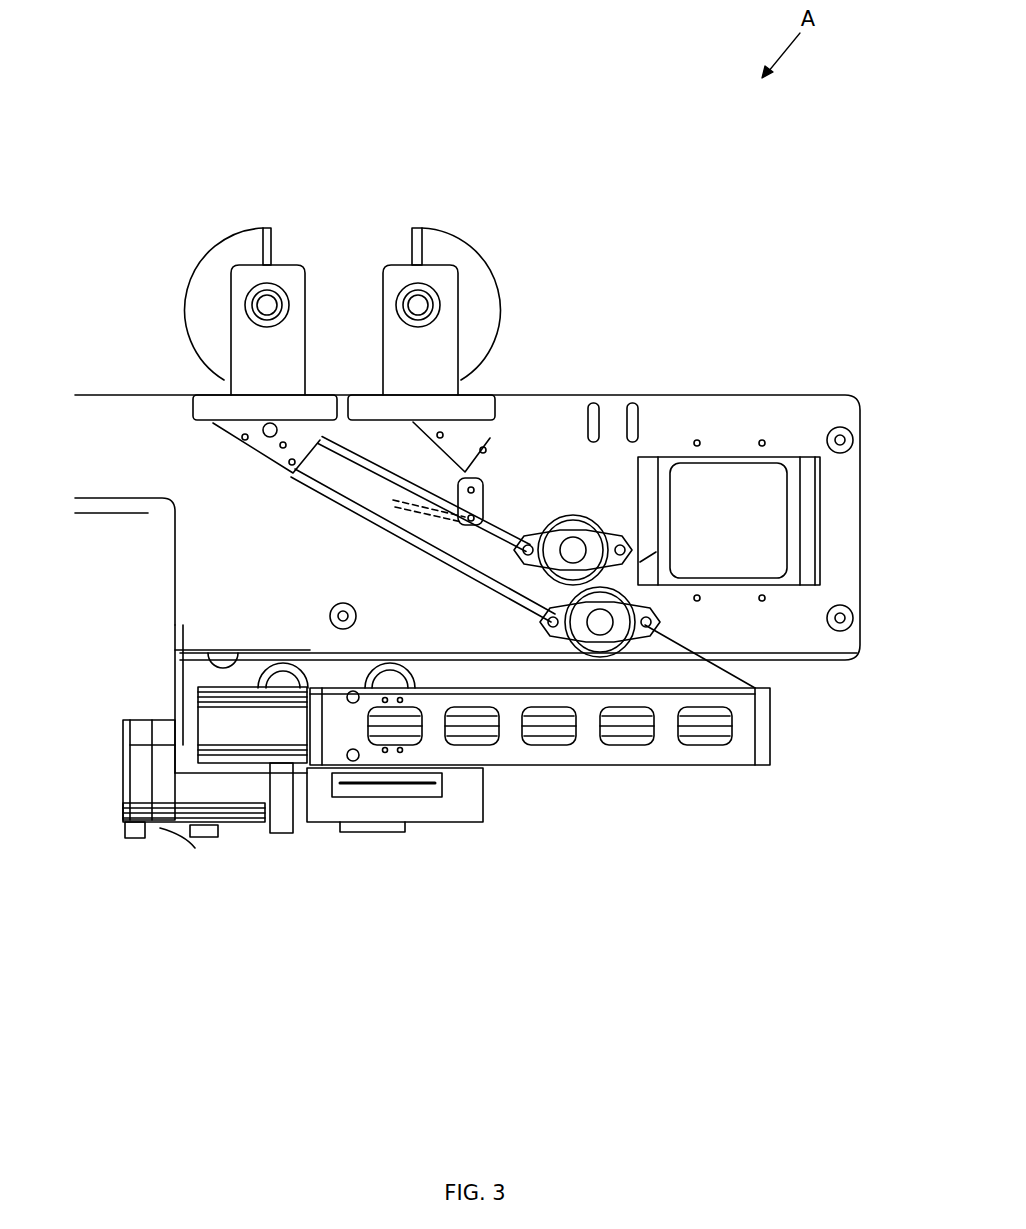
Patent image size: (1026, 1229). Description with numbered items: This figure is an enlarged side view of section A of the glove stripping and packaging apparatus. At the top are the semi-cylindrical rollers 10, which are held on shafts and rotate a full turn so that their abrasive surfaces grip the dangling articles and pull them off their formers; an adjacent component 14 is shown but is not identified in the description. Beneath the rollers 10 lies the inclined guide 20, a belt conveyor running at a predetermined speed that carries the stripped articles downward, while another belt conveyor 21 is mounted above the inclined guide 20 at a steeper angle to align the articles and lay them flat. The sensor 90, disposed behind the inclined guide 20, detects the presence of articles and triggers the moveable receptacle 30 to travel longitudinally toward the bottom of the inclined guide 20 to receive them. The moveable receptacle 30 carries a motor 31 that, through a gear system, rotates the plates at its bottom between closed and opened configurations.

The semi-cylindrical roller 10 is at (236, 248).
The roller wheel 14 is at (209, 250).
The inclined guide 20 is at (497, 538).
The belt conveyor 21 is at (567, 510).
The moveable receptacle 30 is at (590, 750).
The motor 31 is at (251, 732).
The sensor 90 is at (471, 492).